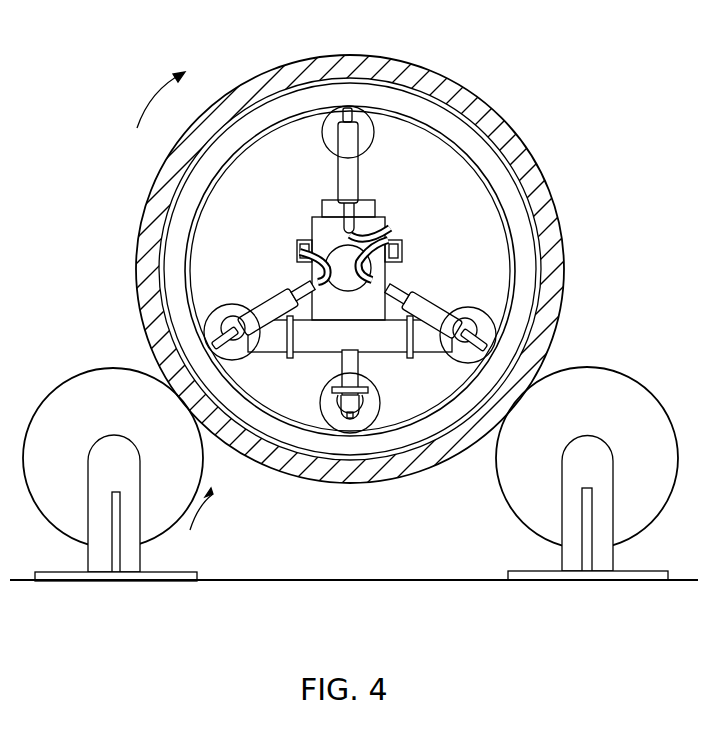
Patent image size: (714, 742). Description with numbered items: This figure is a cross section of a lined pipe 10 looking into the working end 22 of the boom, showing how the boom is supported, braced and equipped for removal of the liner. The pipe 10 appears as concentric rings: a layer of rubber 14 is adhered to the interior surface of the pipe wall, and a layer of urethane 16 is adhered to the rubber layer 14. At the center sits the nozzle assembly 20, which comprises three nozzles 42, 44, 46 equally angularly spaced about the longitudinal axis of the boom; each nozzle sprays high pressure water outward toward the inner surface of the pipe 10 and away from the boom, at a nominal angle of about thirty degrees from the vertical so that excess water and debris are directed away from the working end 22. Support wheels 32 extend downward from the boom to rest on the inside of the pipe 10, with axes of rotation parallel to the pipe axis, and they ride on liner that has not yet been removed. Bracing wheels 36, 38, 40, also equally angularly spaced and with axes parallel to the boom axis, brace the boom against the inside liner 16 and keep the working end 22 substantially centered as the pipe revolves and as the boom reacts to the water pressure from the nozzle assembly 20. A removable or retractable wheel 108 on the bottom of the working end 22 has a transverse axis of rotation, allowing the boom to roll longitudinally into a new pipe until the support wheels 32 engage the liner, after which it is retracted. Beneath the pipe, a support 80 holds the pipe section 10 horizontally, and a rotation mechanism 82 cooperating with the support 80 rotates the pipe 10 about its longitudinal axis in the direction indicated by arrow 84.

The pipe 10 is at (537, 187).
The layer of rubber 14 is at (173, 210).
The layer of urethane 16 is at (193, 195).
The nozzle assembly 20 is at (401, 274).
The working end 22 is at (370, 232).
The support wheels 32 is at (375, 410).
The bracing wheel 36 is at (485, 342).
The bracing wheel 38 is at (331, 117).
The bracing wheel 40 is at (222, 315).
The nozzle 42 is at (360, 113).
The nozzle 44 is at (240, 322).
The nozzle 46 is at (470, 330).
The support 80 is at (93, 362).
The rotation mechanism 82 is at (65, 378).
The arrow 84 is at (150, 105).
The retractable wheel 108 is at (340, 403).